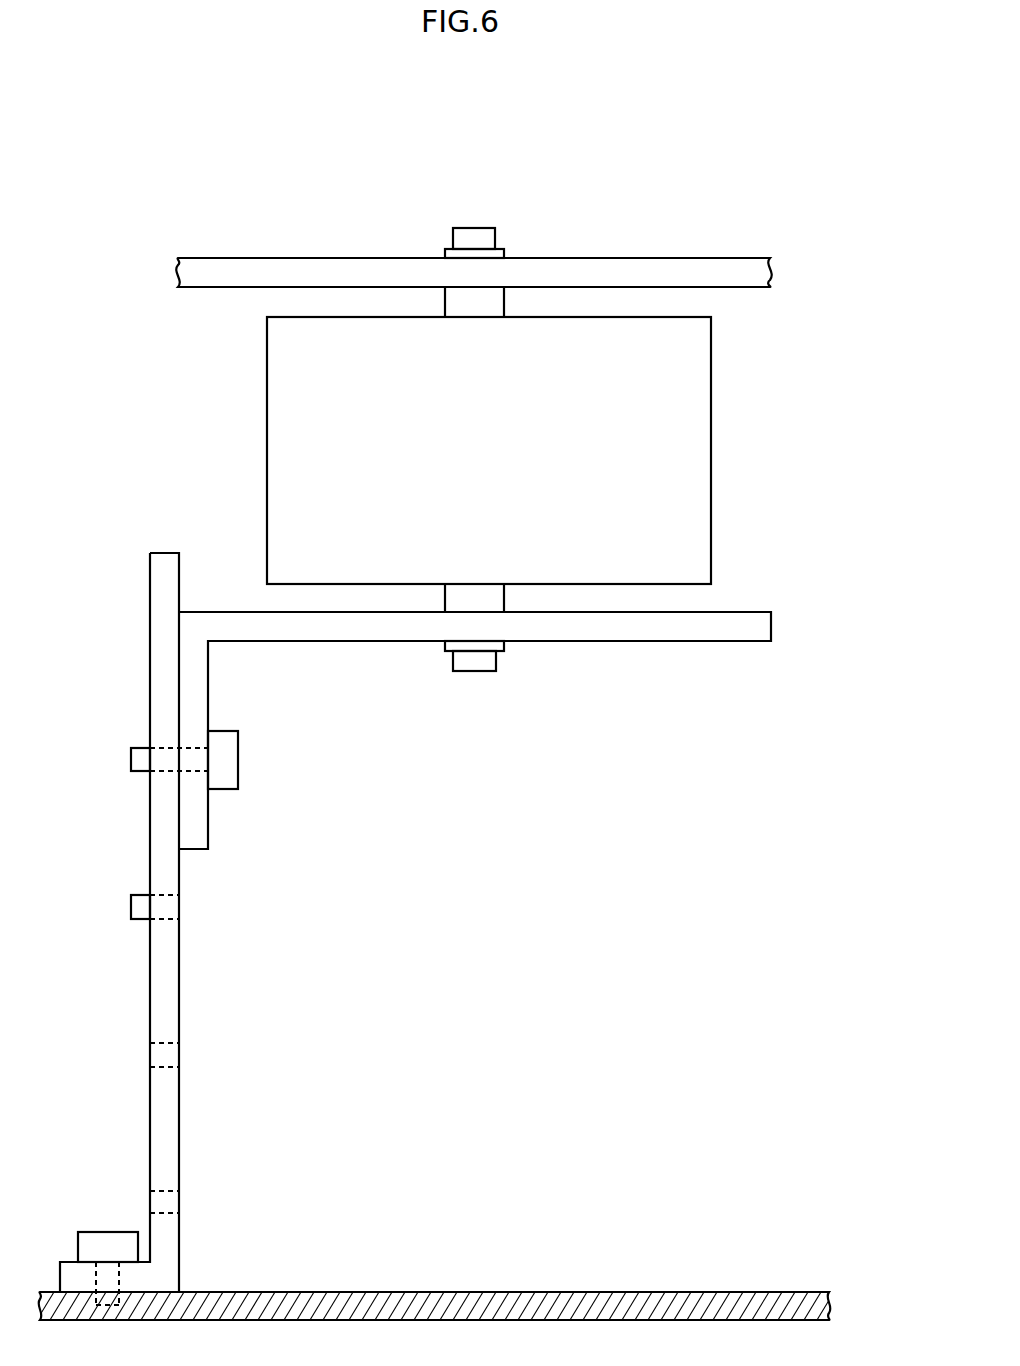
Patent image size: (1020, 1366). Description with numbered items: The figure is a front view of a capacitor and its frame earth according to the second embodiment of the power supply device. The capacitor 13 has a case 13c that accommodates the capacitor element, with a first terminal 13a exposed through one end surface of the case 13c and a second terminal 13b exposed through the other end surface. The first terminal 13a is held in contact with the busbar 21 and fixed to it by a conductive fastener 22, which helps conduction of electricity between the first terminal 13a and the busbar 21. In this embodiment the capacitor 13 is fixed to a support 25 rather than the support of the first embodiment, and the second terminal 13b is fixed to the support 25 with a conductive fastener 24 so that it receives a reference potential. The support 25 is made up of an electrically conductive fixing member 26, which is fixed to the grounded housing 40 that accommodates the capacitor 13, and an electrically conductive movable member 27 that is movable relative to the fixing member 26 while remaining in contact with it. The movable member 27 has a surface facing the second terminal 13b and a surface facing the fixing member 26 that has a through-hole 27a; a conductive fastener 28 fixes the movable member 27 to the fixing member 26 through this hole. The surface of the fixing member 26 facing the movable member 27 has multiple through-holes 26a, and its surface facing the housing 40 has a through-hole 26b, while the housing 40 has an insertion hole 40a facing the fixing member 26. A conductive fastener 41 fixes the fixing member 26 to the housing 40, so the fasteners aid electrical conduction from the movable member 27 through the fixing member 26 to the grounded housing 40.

The capacitor 13 is at (562, 458).
The first terminal 13a is at (457, 298).
The second terminal 13b is at (457, 593).
The case 13c is at (693, 428).
The busbar 21 is at (630, 270).
The fastener 22 is at (475, 240).
The fastener 24 is at (490, 685).
The support 25 is at (506, 674).
The fixing member 26 is at (166, 573).
The through-holes 26a is at (162, 742).
The through-hole 26b is at (92, 1272).
The movable member 27 is at (758, 628).
The through-hole 27a is at (195, 742).
The fastener 28 is at (232, 760).
The housing 40 is at (680, 1305).
The insertion hole 40a is at (124, 1294).
The fastener 41 is at (107, 1237).